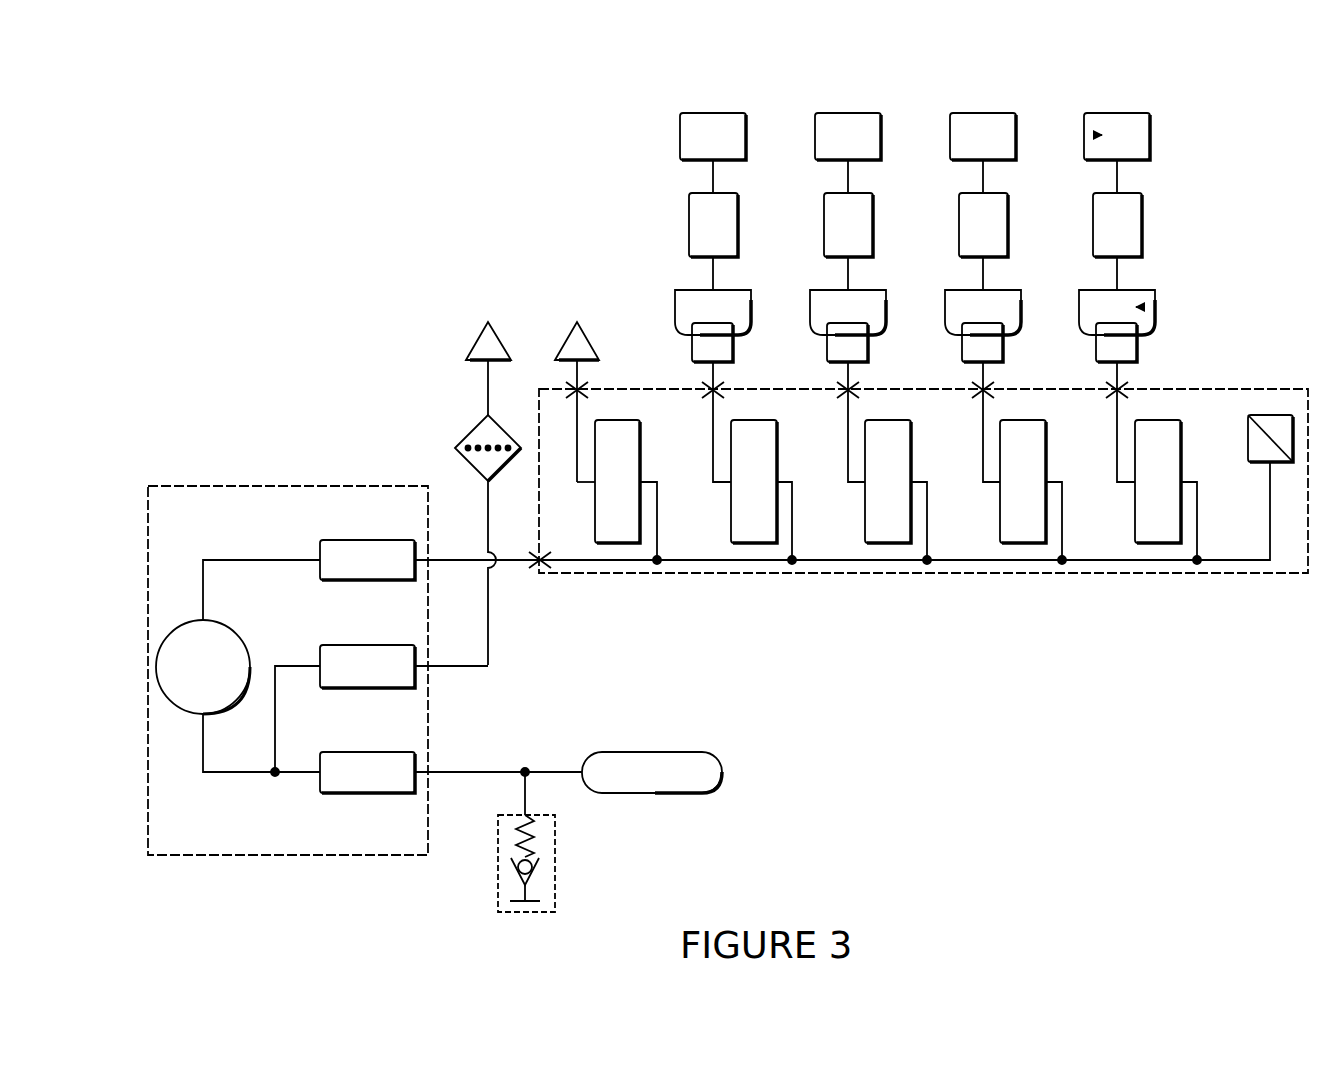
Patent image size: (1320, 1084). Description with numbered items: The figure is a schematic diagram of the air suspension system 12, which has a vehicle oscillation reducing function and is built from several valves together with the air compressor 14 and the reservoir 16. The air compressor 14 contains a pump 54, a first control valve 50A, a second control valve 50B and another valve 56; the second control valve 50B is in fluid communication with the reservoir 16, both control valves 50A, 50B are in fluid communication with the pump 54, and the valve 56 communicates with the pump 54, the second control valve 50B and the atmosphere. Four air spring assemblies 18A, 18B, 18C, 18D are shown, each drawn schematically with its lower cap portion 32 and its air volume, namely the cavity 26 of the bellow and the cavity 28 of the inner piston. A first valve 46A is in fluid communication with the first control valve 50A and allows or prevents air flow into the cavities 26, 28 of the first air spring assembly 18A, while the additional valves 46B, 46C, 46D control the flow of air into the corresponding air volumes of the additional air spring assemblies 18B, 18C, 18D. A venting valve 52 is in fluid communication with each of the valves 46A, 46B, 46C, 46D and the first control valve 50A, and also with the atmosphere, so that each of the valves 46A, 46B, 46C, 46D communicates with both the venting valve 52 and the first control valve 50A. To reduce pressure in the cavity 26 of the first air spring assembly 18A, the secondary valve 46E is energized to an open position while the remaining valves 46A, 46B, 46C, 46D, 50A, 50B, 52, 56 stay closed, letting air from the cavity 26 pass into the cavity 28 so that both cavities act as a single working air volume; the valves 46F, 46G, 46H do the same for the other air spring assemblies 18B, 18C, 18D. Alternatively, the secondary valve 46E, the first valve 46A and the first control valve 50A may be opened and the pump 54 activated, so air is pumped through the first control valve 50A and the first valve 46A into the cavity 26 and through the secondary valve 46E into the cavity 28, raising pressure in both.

The air suspension system 12 is at (158, 432).
The air compressor 14 is at (208, 866).
The reservoir 16 is at (722, 772).
The first air spring assembly 18A is at (1116, 102).
The air spring assembly 18B is at (981, 102).
The air spring assembly 18C is at (846, 102).
The air spring assembly 18D is at (711, 102).
The cavity of the bellow 26 is at (1155, 308).
The cavity of the inner piston 28 is at (1092, 135).
The lower cap portion 32 is at (1137, 348).
The first valve 46A is at (1157, 530).
The valve 46B is at (1022, 530).
The valve 46C is at (887, 530).
The valve 46D is at (752, 530).
The secondary valve 46E is at (1142, 222).
The valve 46F is at (959, 224).
The valve 46G is at (824, 224).
The valve 46H is at (689, 224).
The first control valve 50A is at (367, 582).
The second control valve 50B is at (367, 795).
The venting valve 52 is at (617, 530).
The pump 54 is at (156, 667).
The valve 56 is at (367, 690).